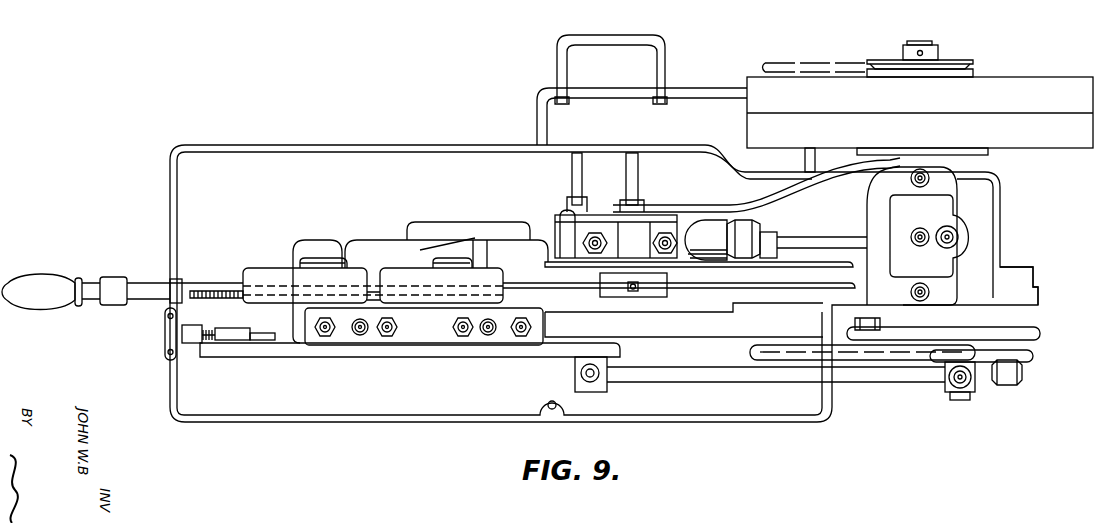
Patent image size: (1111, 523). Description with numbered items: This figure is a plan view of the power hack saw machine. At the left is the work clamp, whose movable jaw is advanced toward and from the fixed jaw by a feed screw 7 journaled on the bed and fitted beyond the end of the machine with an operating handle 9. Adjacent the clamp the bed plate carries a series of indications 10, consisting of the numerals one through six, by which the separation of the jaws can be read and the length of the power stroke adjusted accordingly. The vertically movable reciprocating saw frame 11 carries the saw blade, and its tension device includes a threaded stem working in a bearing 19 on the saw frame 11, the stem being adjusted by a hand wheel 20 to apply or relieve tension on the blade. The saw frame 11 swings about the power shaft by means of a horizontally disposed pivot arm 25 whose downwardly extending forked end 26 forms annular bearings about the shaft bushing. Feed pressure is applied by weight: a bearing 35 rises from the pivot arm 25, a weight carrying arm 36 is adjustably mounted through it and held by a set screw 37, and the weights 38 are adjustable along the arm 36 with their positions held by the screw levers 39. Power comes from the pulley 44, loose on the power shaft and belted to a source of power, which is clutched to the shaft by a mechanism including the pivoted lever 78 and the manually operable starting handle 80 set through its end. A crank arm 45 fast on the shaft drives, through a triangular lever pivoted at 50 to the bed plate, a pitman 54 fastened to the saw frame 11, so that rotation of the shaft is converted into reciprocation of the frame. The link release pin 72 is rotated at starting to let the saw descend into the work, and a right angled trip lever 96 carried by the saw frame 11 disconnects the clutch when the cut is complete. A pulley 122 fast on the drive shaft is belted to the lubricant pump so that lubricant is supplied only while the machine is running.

The operating handle 9 is at (97, 280).
The feed screw 7 is at (207, 300).
The hand wheel 20 is at (165, 336).
The bearing 19 is at (230, 331).
The saw frame 11 is at (228, 350).
The weights 38 is at (280, 270).
The screw levers 39 is at (333, 258).
The indications 10 is at (518, 222).
The trip lever 96 is at (570, 240).
The link release pin 72 is at (572, 168).
The starting handle 80 is at (626, 172).
The pivoted lever 78 is at (712, 203).
The forked end 26 is at (872, 218).
The pulley 122 is at (880, 58).
The pulley 44 is at (747, 116).
The pivot 50 is at (1013, 265).
The bearing 35 is at (665, 274).
The weight carrying arm 36 is at (733, 288).
The set screw 37 is at (640, 292).
The pivot arm 25 is at (767, 298).
The pitman 54 is at (872, 362).
The crank arm 45 is at (880, 338).